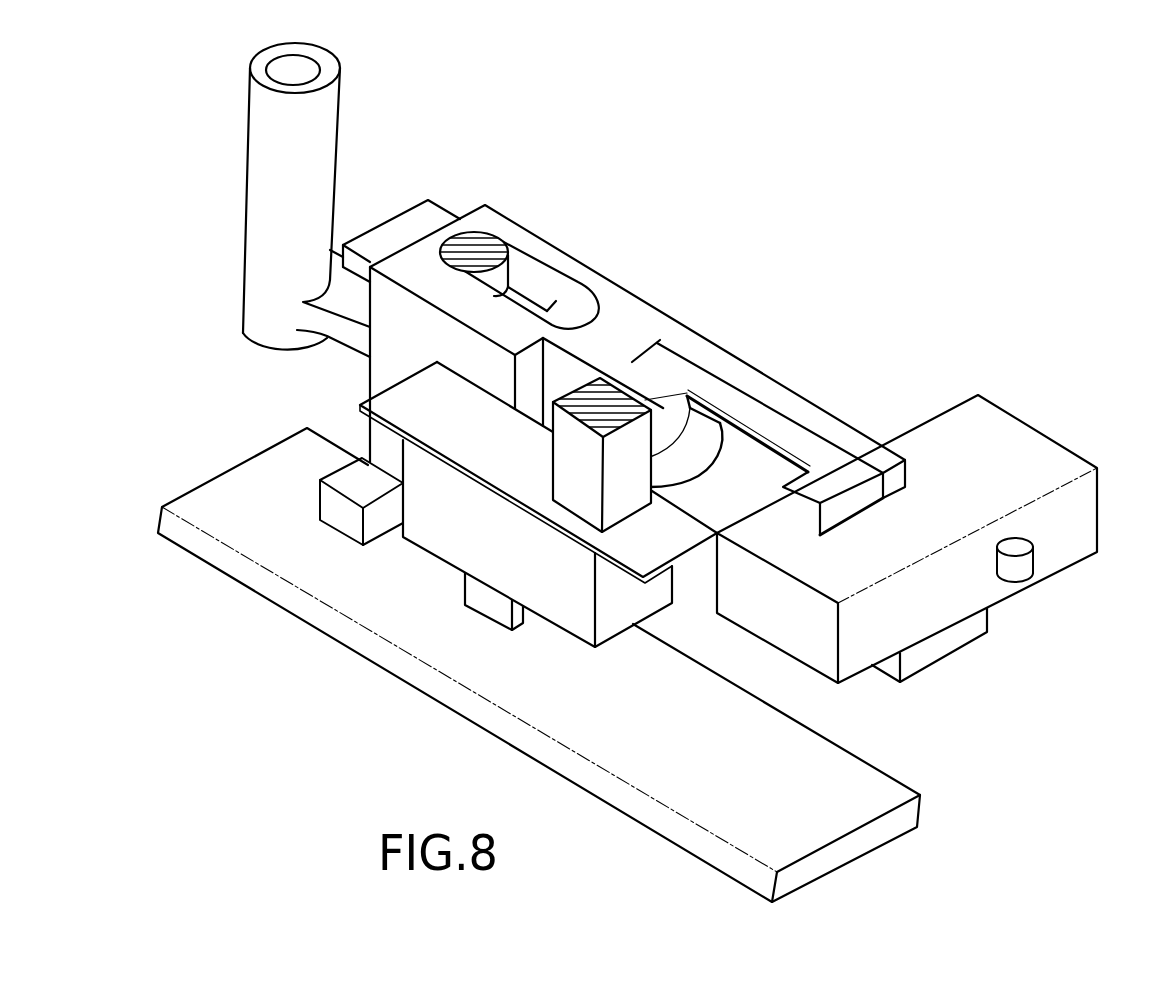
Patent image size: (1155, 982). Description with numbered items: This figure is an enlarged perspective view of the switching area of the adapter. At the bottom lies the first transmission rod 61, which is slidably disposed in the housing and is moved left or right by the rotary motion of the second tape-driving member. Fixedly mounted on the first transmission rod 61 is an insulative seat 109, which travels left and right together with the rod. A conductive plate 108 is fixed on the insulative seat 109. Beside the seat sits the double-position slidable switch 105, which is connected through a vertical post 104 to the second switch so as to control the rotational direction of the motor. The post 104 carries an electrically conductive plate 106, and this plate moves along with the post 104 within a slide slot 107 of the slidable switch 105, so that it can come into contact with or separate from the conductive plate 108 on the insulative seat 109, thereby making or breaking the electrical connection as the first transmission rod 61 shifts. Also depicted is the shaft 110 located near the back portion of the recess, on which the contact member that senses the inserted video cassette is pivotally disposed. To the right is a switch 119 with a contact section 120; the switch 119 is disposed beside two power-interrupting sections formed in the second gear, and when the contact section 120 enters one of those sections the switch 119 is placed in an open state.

The first transmission rod 61 is at (430, 650).
The vertical post 104 is at (632, 500).
The double-position slidable switch 105 is at (572, 615).
The electrically conductive plate 106 is at (703, 453).
The slide slot 107 is at (520, 490).
The conductive plate 108 is at (758, 415).
The insulative seat 109 is at (643, 300).
The shaft 110 is at (298, 70).
The switch 119 is at (1028, 437).
The contact section 120 is at (1020, 575).